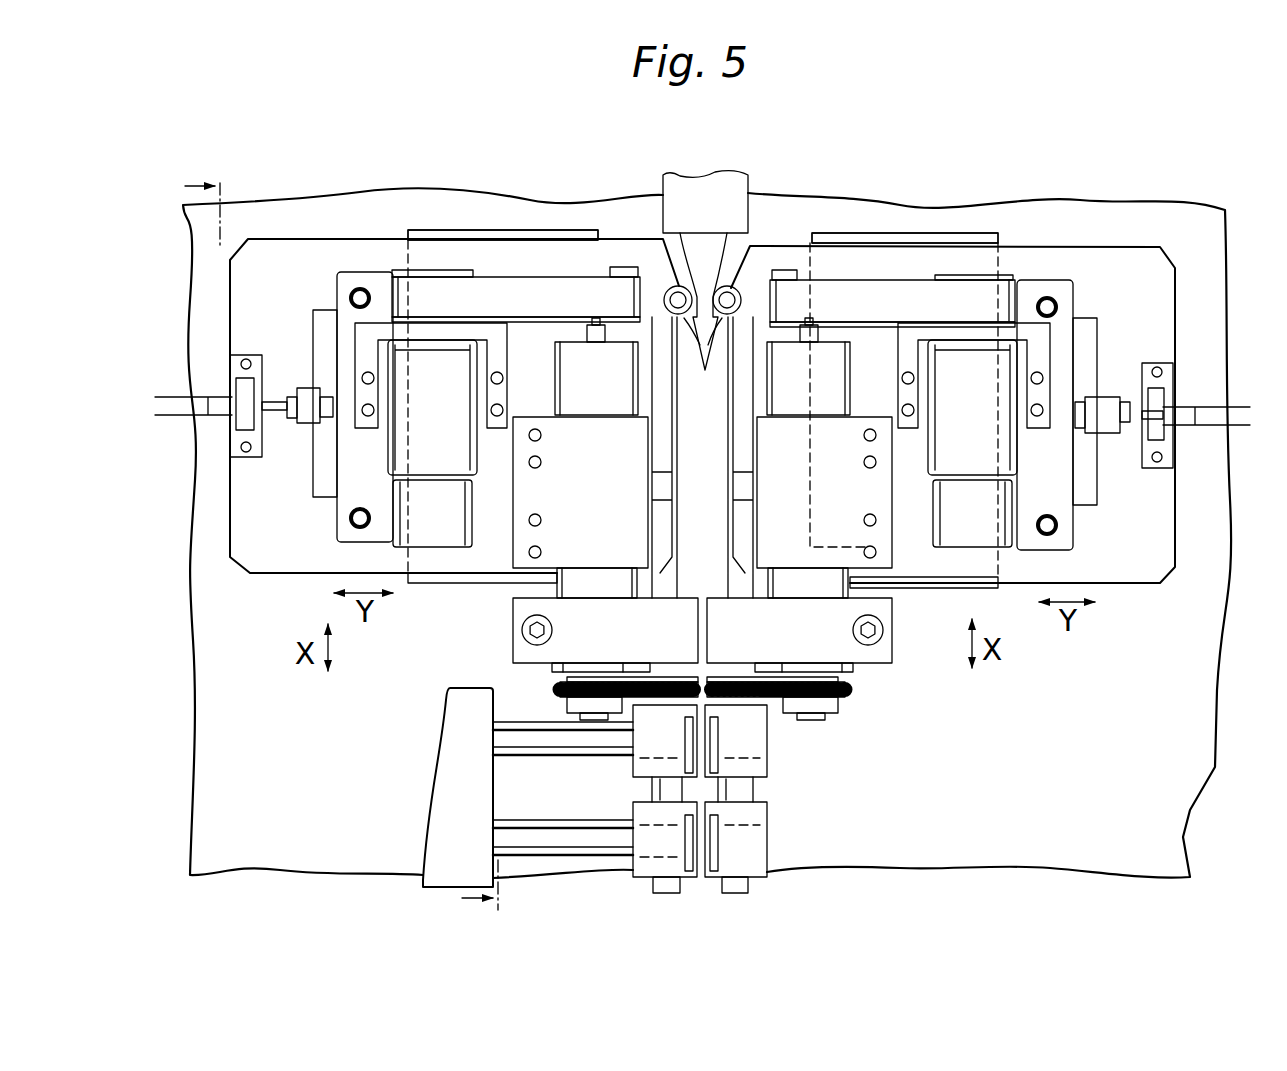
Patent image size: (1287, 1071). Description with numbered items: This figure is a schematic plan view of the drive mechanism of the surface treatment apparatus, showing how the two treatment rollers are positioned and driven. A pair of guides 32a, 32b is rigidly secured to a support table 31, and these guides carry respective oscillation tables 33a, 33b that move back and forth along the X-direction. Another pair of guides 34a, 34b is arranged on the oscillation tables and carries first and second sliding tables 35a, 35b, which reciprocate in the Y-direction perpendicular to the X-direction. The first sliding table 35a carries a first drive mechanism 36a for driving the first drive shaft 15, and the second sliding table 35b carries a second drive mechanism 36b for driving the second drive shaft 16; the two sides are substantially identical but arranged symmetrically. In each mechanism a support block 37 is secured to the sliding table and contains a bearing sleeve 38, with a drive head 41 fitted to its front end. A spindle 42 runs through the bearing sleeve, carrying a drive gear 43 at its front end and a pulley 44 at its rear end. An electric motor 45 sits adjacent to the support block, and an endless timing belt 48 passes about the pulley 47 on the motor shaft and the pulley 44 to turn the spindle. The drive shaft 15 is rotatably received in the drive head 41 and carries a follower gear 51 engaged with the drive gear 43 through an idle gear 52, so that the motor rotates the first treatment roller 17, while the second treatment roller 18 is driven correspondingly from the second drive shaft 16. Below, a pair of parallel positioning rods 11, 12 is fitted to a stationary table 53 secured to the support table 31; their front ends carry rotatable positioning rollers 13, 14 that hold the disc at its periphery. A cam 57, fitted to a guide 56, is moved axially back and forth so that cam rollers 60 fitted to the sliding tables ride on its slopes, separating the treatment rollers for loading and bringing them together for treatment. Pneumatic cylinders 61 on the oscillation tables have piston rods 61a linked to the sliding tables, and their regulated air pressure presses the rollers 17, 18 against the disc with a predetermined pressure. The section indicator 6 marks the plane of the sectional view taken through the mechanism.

The section line 6 is at (326, 544).
The positioning rod 11 is at (550, 832).
The positioning rod 12 is at (520, 742).
The positioning roller 13 is at (718, 862).
The positioning roller 14 is at (717, 740).
The first drive shaft 15 is at (653, 887).
The second drive shaft 16 is at (750, 887).
The first treatment roller 17 is at (633, 810).
The second treatment roller 18 is at (767, 810).
The support table 31 is at (1207, 690).
The guide 32a is at (582, 230).
The guide 32b is at (920, 232).
The oscillation table 33a is at (277, 568).
The oscillation table 33b is at (1143, 575).
The guide 34a is at (313, 332).
The guide 34b is at (1096, 336).
The first sliding table 35a is at (340, 504).
The second sliding table 35b is at (1060, 508).
The first drive mechanism 36a is at (493, 256).
The second drive mechanism 36b is at (1035, 266).
The support block 37 is at (513, 548).
The bearing sleeve 38 is at (578, 375).
The drive head 41 is at (513, 647).
The spindle 42 is at (590, 330).
The drive gear 43 is at (560, 700).
The pulley 44 is at (560, 268).
The electric motor 45 is at (398, 445).
The pulley 47 is at (412, 270).
The timing belt 48 is at (484, 270).
The follower gear 51 is at (666, 735).
The idle gear 52 is at (635, 673).
The stationary table 53 is at (450, 783).
The guide 56 is at (727, 195).
The cam 57 is at (690, 240).
The cam roller 60 is at (702, 442).
The pneumatic cylinder 61 is at (200, 412).
The piston rod 61a is at (265, 420).